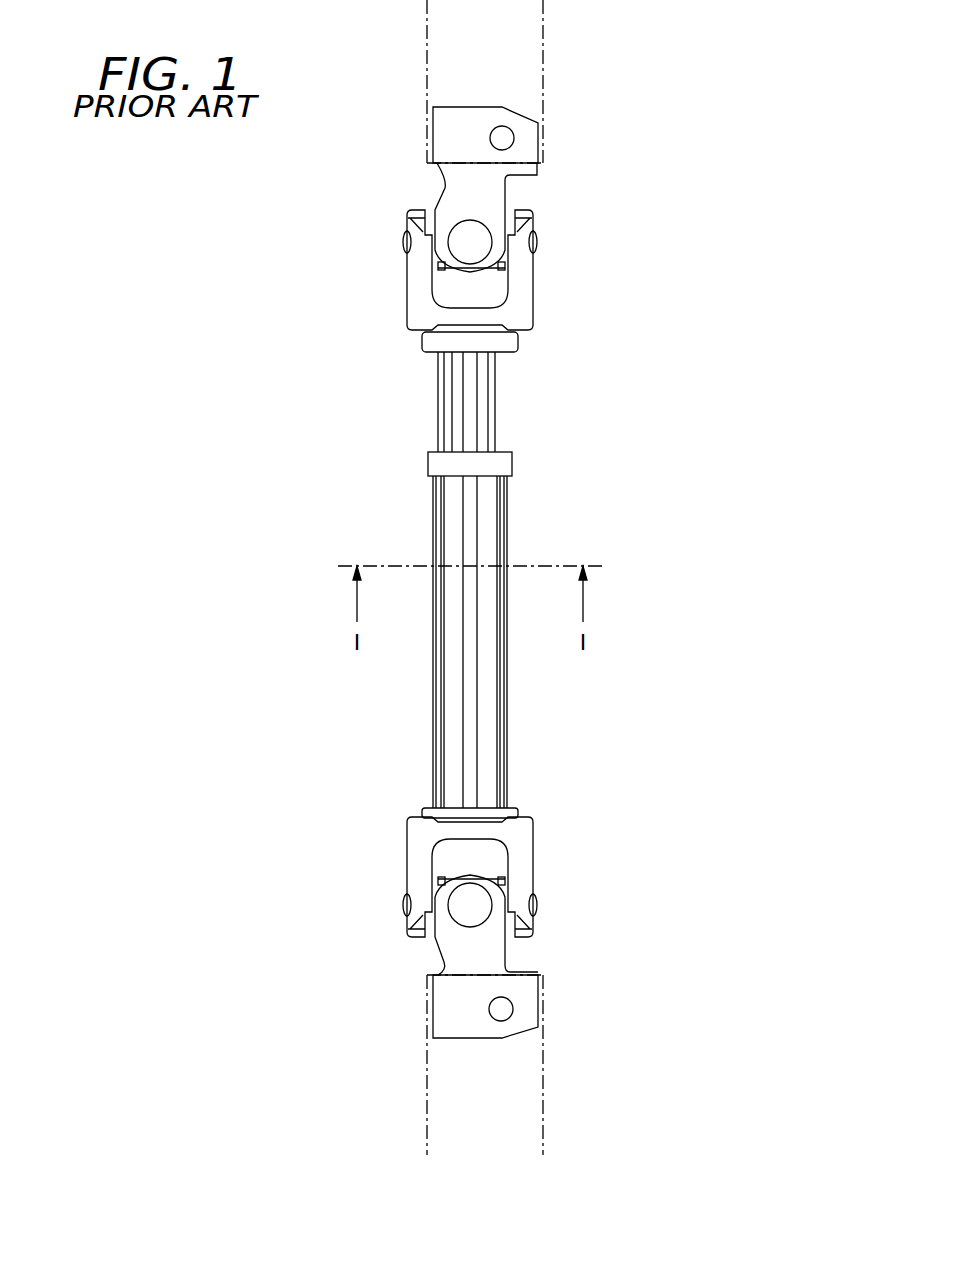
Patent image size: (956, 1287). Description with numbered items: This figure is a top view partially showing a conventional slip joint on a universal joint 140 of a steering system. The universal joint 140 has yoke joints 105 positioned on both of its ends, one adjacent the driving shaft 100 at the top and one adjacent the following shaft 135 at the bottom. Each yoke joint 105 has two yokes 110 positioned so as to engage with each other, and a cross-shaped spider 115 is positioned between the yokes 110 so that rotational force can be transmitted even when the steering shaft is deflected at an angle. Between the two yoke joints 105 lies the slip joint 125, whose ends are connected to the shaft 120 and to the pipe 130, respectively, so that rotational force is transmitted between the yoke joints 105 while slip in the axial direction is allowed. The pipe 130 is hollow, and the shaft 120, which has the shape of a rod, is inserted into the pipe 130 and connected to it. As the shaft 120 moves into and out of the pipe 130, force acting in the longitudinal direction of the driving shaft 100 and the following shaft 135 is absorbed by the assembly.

The driving shaft 100 is at (543, 27).
The yoke joint 105 is at (388, 204).
The yoke 110 is at (497, 193).
The cross-shaped spider 115 is at (462, 246).
The shaft 120 is at (497, 377).
The slip joint 125 is at (417, 421).
The pipe 130 is at (440, 712).
The following shaft 135 is at (543, 1092).
The universal joint 140 is at (679, 416).